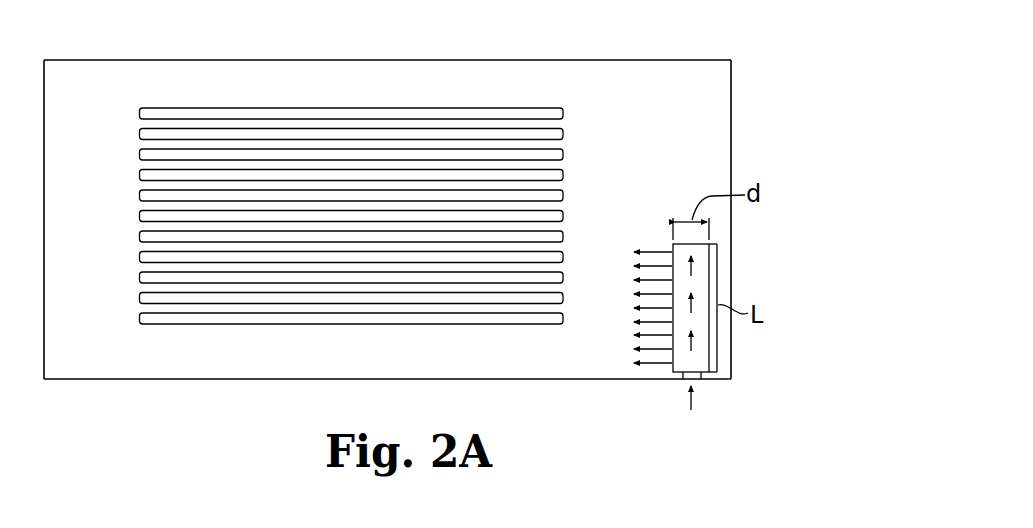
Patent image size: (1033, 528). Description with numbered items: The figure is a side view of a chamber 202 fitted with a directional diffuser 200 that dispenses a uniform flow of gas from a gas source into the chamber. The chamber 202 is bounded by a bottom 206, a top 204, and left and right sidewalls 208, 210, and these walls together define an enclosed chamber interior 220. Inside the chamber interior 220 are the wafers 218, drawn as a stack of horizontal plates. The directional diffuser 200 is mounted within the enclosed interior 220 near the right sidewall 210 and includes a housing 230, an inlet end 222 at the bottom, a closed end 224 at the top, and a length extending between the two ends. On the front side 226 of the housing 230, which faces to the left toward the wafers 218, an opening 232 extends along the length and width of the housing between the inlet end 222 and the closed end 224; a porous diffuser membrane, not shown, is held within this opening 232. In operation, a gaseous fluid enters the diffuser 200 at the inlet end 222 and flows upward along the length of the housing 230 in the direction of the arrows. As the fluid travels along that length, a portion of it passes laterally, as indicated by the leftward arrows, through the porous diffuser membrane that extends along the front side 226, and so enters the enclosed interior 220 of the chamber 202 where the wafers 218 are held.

The directional diffuser 200 is at (733, 288).
The chamber 202 is at (432, 191).
The top 204 is at (557, 60).
The bottom 206 is at (478, 379).
The left sidewall 208 is at (45, 258).
The right sidewall 210 is at (730, 111).
The wafers 218 is at (343, 108).
The chamber interior 220 is at (101, 361).
The inlet end 222 is at (733, 360).
The closed end 224 is at (650, 240).
The front side 226 is at (670, 301).
The housing 230 is at (689, 258).
The opening 232 is at (672, 342).